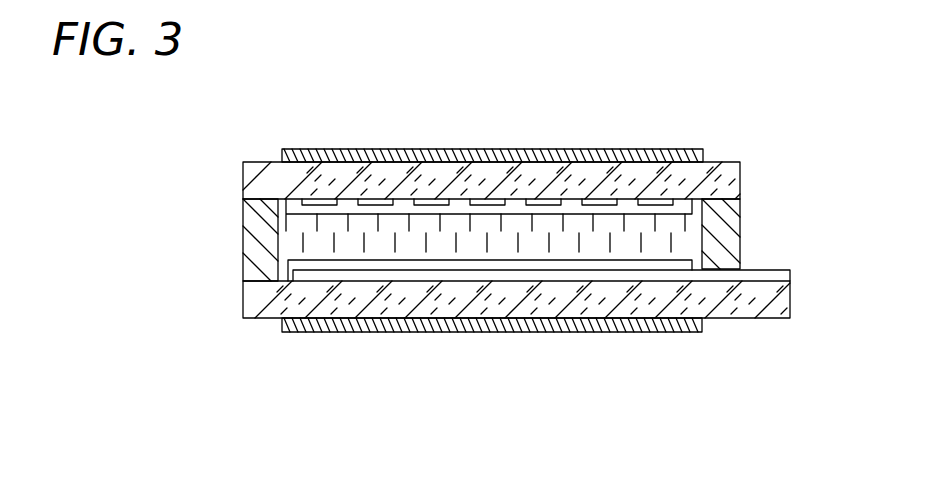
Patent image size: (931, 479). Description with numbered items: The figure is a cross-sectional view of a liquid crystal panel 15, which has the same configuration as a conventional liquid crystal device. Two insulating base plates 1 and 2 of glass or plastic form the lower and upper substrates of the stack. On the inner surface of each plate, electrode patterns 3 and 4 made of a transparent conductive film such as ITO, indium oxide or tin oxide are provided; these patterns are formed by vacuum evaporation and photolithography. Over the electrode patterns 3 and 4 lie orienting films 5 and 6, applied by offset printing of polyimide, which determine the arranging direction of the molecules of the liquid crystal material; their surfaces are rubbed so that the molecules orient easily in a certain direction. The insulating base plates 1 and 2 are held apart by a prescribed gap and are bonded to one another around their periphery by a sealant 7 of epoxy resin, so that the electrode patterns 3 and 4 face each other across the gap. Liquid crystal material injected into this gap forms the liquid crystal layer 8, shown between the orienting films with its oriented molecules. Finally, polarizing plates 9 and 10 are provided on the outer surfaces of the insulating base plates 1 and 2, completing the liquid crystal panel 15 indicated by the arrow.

The insulating base plate 1 is at (262, 300).
The insulating base plate 2 is at (257, 190).
The electrode pattern 3 is at (475, 272).
The electrode pattern 4 is at (320, 202).
The orienting film 5 is at (403, 264).
The orienting film 6 is at (460, 208).
The sealant 7 is at (250, 246).
The liquid crystal layer 8 is at (325, 250).
The polarizing plate 9 is at (555, 333).
The polarizing plate 10 is at (551, 148).
The liquid crystal panel 15 is at (603, 120).